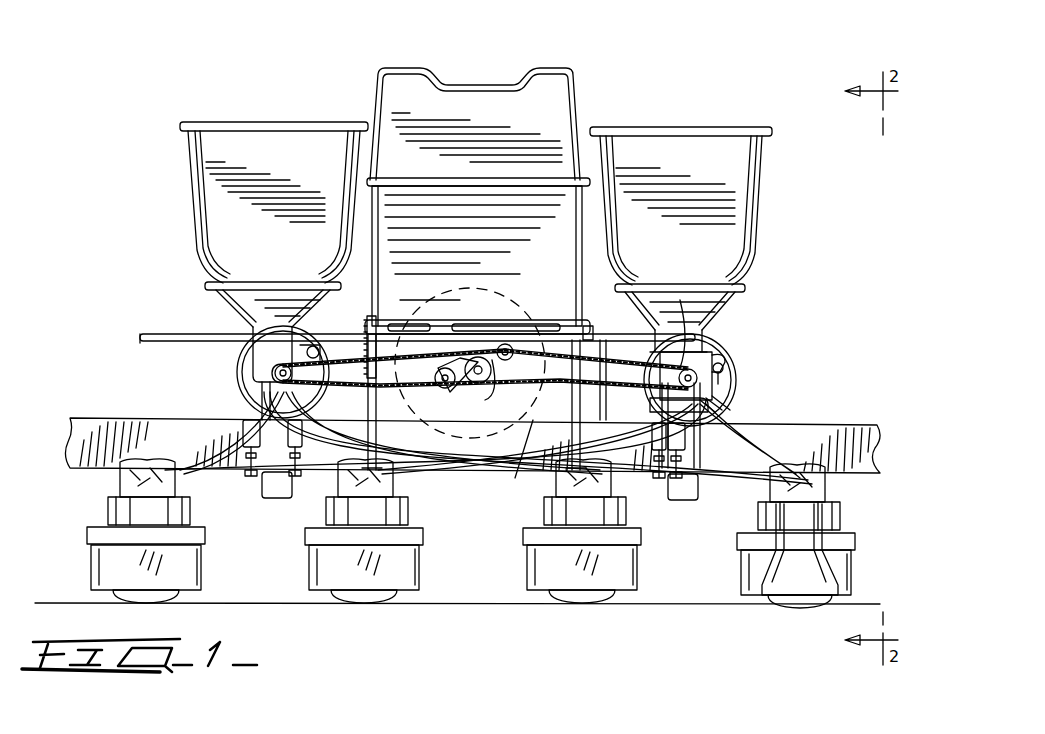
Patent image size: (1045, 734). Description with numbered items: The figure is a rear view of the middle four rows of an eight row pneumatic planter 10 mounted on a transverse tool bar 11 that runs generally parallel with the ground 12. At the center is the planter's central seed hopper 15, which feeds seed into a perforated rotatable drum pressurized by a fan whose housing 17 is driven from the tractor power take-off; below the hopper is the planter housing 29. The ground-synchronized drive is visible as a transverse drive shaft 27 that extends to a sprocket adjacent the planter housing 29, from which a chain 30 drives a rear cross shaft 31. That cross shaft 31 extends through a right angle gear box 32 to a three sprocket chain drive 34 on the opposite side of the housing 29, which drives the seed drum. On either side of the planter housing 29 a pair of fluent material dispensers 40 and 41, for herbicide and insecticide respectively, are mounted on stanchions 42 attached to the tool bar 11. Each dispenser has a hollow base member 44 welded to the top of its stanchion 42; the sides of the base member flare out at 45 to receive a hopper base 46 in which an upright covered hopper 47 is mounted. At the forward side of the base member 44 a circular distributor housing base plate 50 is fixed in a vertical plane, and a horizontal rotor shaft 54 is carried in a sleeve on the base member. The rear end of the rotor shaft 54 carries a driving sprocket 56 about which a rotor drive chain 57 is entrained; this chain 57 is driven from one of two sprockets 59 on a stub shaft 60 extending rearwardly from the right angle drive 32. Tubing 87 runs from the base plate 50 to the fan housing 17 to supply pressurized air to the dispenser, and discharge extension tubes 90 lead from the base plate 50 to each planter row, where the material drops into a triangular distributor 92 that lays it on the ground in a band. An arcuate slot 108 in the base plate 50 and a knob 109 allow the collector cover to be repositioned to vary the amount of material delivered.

The planter 10 is at (292, 103).
The tool bar 11 is at (112, 418).
The ground 12 is at (225, 603).
The central seed hopper 15 is at (463, 82).
The housing 17 is at (415, 322).
The transverse drive shaft 27 is at (178, 334).
The planter housing 29 is at (380, 398).
The chain 30 is at (364, 326).
The rear cross shaft 31 is at (380, 412).
The right angle gear box 32 is at (443, 390).
The three sprocket chain drive 34 is at (592, 326).
The fluent material dispenser 40 is at (752, 392).
The fluent material dispenser 41 is at (232, 372).
The stanchion 42 is at (258, 460).
The hollow base member 44 is at (722, 379).
The flared sides 45 is at (715, 326).
The hopper base 46 is at (745, 297).
The hopper 47 is at (762, 197).
The distributor housing base plate 50 is at (730, 412).
The rotor shaft 54 is at (712, 406).
The driving sprocket 56 is at (680, 300).
The rotor drive chain 57 is at (533, 420).
The sprocket 59 is at (508, 362).
The stub shaft 60 is at (477, 384).
The tubing 87 is at (608, 334).
The discharge extension tubes 90 is at (210, 478).
The triangular distributor 92 is at (830, 572).
The arcuate slot 108 is at (724, 355).
The knob 109 is at (722, 366).